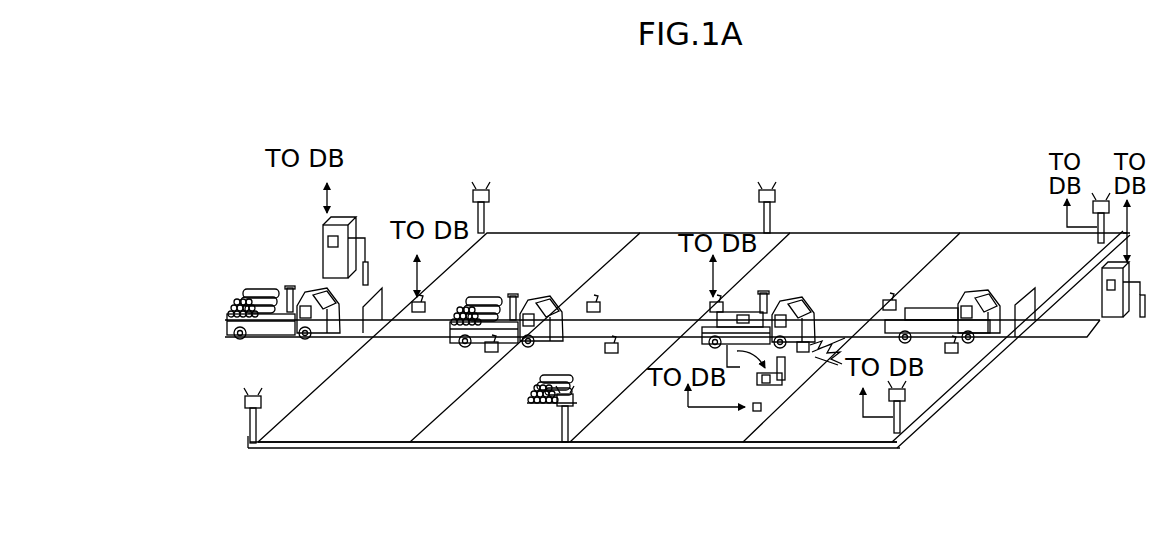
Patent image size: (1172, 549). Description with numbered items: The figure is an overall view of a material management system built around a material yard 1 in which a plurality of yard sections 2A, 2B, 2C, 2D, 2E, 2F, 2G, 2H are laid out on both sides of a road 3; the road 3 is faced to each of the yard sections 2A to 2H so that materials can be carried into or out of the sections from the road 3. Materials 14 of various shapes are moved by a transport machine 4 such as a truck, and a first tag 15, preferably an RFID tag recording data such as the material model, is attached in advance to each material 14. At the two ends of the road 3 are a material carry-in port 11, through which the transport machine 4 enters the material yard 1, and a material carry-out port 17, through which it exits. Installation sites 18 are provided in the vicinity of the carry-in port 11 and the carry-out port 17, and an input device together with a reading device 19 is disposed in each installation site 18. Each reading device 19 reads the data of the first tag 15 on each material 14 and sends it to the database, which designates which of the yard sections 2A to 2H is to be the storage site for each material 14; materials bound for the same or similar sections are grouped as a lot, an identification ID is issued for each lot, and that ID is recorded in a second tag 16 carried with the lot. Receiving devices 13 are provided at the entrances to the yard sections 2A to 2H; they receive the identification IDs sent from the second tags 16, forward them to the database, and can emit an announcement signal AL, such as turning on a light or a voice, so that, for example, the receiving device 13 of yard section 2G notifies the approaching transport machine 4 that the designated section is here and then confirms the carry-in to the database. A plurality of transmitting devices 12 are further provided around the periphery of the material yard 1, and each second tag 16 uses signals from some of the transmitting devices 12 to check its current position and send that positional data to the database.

The material yard 1 is at (533, 103).
The yard section 2A is at (540, 240).
The yard section 2B is at (662, 240).
The yard section 2C is at (850, 240).
The yard section 2D is at (985, 240).
The yard section 2E is at (375, 430).
The yard section 2F is at (445, 430).
The yard section 2G is at (675, 430).
The yard section 2H is at (820, 432).
The road 3 is at (633, 330).
The transport machine 4 is at (322, 332).
The material carry-in port 11 is at (377, 310).
The transmitting device 12 is at (767, 188).
The receiving device 13 is at (425, 300).
The material 14 is at (290, 287).
The first tag 15 is at (240, 298).
The second tag 16 is at (765, 395).
The material carry-out port 17 is at (1020, 337).
The installation site 18 is at (345, 222).
The reading device 19 is at (368, 262).
The announcement signal AL is at (830, 362).